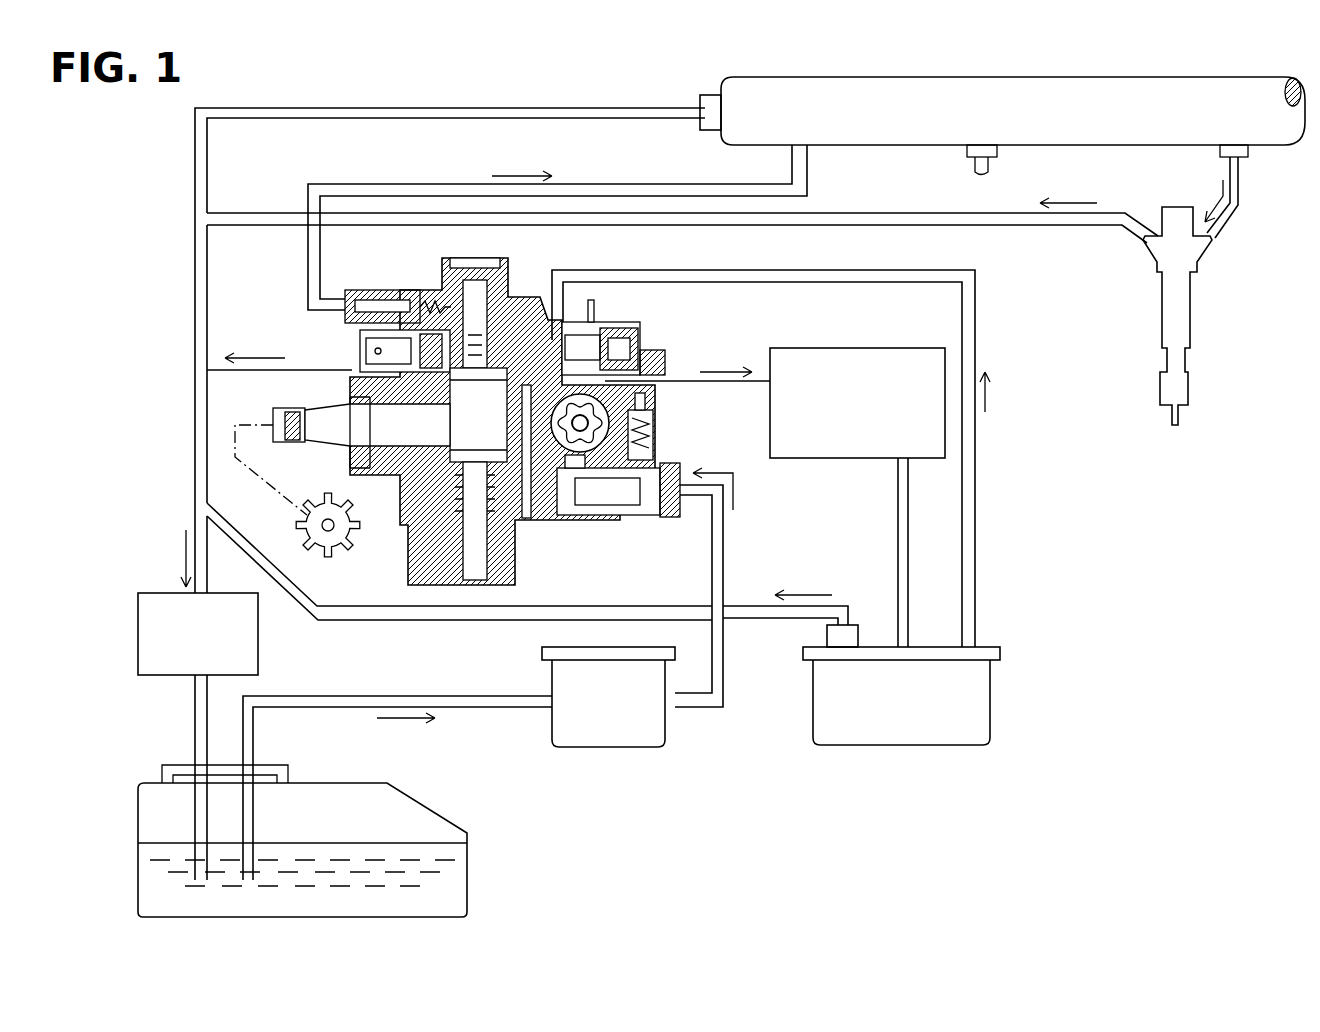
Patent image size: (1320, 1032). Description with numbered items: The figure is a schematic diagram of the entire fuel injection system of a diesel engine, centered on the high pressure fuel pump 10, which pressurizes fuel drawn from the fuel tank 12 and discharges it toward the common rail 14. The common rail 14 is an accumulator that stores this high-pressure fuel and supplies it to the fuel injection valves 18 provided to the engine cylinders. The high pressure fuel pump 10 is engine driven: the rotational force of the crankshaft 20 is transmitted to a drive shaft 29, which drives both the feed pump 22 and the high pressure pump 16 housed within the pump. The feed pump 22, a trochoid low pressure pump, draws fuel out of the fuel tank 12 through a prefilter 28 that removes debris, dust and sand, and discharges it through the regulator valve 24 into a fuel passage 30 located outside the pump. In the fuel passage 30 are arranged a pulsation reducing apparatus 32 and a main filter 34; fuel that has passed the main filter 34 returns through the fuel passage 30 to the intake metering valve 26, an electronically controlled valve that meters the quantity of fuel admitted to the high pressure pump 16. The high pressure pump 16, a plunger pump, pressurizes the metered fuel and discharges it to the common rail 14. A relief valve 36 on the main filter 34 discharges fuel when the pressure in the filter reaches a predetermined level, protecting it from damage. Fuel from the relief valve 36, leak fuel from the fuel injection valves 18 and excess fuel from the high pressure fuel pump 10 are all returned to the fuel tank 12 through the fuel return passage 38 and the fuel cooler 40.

The high pressure fuel pump 10 is at (484, 421).
The fuel tank 12 is at (362, 783).
The common rail 14 is at (1032, 63).
The high pressure pump 16 is at (493, 318).
The fuel injection valves 18 is at (1193, 311).
The crankshaft 20 is at (341, 548).
The feed pump 22 is at (590, 462).
The regulator valve 24 is at (655, 430).
The intake metering valve 26 is at (637, 337).
The prefilter 28 is at (575, 748).
The drive shaft 29 is at (318, 403).
The fuel passage 30 is at (898, 505).
The pulsation reducing apparatus 32 is at (863, 339).
The main filter 34 is at (837, 748).
The relief valve 36 is at (858, 640).
The fuel return passage 38 is at (195, 510).
The fuel cooler 40 is at (258, 645).